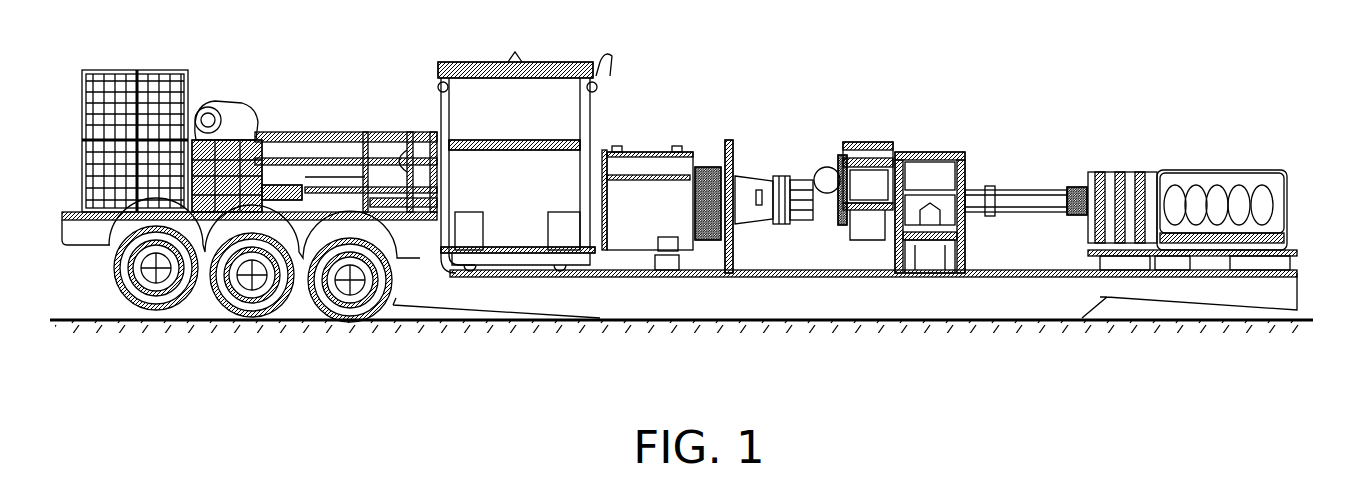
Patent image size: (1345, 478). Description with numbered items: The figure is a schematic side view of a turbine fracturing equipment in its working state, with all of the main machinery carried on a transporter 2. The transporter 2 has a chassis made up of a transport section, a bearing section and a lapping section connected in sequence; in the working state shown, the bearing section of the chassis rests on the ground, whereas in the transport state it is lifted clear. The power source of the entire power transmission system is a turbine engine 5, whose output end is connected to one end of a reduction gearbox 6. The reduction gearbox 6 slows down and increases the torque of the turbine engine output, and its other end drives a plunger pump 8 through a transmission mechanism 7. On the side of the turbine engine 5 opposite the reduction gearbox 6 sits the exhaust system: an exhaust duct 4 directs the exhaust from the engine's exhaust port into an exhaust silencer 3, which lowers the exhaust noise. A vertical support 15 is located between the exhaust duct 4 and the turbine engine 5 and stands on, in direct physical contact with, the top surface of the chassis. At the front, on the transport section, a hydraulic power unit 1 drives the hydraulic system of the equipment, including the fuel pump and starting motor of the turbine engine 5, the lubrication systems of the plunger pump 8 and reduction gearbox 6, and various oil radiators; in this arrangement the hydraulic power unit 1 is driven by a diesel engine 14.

The hydraulic power unit 1 is at (246, 195).
The transporter 2 is at (413, 257).
The exhaust silencer 3 is at (516, 184).
The exhaust duct 4 is at (647, 194).
The turbine engine 5 is at (853, 212).
The reduction gearbox 6 is at (928, 203).
The transmission mechanism 7 is at (1038, 195).
The plunger pump 8 is at (1208, 227).
The diesel engine 14 is at (258, 132).
The vertical support 15 is at (735, 140).